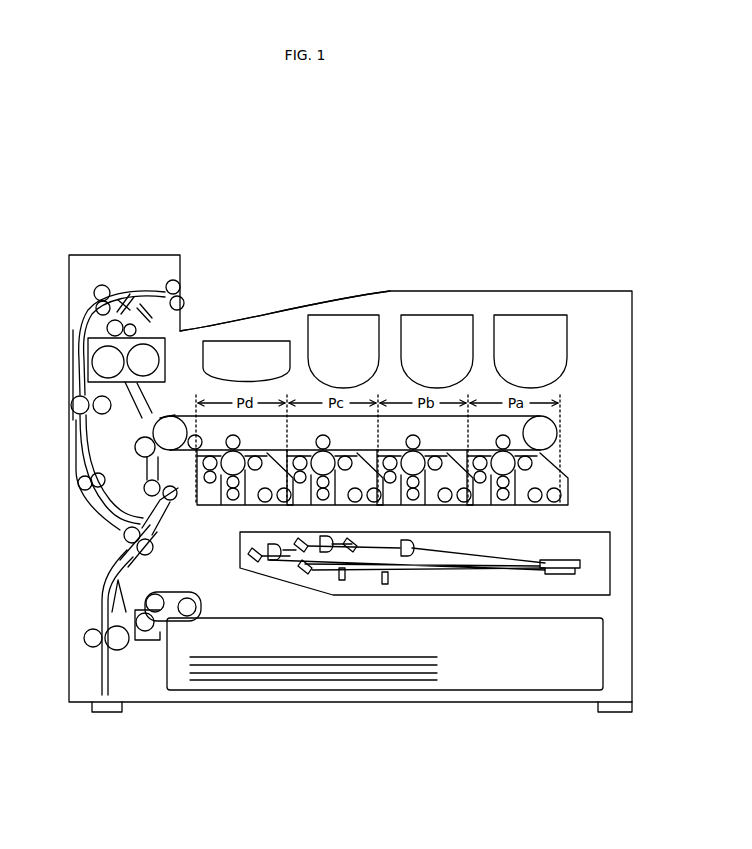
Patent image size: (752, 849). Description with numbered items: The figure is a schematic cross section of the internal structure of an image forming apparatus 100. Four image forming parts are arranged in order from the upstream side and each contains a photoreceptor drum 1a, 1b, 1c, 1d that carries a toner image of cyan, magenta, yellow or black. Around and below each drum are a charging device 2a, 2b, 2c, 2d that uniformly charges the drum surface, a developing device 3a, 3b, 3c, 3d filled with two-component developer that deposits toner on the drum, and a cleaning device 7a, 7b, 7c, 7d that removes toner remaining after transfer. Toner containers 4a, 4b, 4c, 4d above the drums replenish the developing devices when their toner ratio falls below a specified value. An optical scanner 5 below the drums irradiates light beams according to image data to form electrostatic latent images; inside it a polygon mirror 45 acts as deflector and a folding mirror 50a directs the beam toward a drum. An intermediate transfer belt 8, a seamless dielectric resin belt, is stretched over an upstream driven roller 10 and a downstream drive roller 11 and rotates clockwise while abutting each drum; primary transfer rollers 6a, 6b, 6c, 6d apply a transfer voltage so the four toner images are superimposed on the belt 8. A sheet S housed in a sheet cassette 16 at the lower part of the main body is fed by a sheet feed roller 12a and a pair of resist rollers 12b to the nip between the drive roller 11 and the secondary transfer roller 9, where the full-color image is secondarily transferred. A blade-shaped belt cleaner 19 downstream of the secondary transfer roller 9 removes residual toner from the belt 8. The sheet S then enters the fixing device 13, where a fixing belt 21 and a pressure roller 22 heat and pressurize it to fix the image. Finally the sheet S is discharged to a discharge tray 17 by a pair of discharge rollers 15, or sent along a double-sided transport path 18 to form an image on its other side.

The image forming apparatus 100 is at (539, 290).
The photoreceptor drum 1a is at (503, 463).
The photoreceptor drum 1b is at (413, 463).
The photoreceptor drum 1c is at (323, 463).
The photoreceptor drum 1d is at (233, 463).
The charging device 2a is at (500, 502).
The charging device 2b is at (410, 502).
The charging device 2c is at (320, 502).
The charging device 2d is at (229, 502).
The developing device 3a is at (573, 488).
The developing device 3b is at (439, 452).
The developing device 3c is at (349, 452).
The developing device 3d is at (259, 452).
The toner container 4a is at (530, 351).
The toner container 4b is at (437, 351).
The toner container 4c is at (343, 351).
The toner container 4d is at (246, 361).
The optical scanner 5 is at (448, 565).
The primary transfer roller 6a is at (496, 440).
The primary transfer roller 6b is at (406, 440).
The primary transfer roller 6c is at (316, 440).
The primary transfer roller 6d is at (226, 440).
The cleaning device 7a is at (478, 485).
The cleaning device 7b is at (388, 485).
The cleaning device 7c is at (298, 485).
The cleaning device 7d is at (207, 482).
The intermediate transfer belt 8 is at (527, 417).
The secondary transfer roller 9 is at (135, 447).
The driven roller 10 is at (556, 434).
The drive roller 11 is at (172, 418).
The sheet feed roller 12a is at (190, 598).
The pair of resist rollers 12b is at (167, 510).
The fixing device 13 is at (82, 355).
The pair of discharge rollers 15 is at (181, 287).
The sheet cassette 16 is at (605, 642).
The discharge tray 17 is at (287, 312).
The double-sided transport path 18 is at (75, 428).
The belt cleaner 19 is at (172, 418).
The fixing belt 21 is at (78, 396).
The pressure roller 22 is at (143, 352).
The polygon mirror 45 is at (562, 574).
The folding mirror 50a is at (562, 499).
The sheet S is at (370, 656).